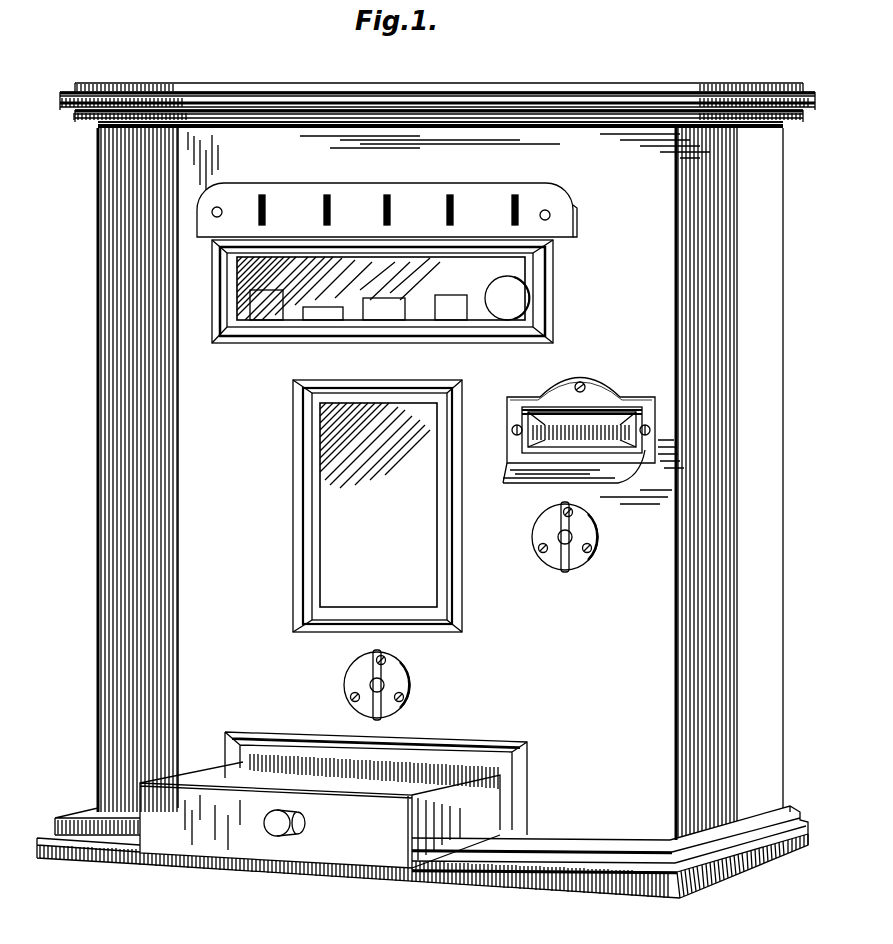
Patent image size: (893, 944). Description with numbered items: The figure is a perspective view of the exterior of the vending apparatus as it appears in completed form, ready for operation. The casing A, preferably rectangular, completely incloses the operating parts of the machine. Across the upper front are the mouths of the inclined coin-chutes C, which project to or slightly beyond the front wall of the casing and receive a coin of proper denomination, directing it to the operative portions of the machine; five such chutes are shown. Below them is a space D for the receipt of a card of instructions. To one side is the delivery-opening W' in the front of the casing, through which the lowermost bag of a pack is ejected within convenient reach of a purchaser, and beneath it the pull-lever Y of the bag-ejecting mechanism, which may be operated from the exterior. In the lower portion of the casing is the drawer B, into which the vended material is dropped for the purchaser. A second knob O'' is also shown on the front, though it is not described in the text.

The casing A is at (426, 490).
The drawer B is at (333, 800).
The mouths of the inclined coin-chutes C is at (268, 198).
The space for the receipt of a card of instructions D is at (321, 552).
The delivery-opening W' is at (593, 424).
The pull-lever Y is at (572, 558).
The operating knob O'' is at (404, 685).